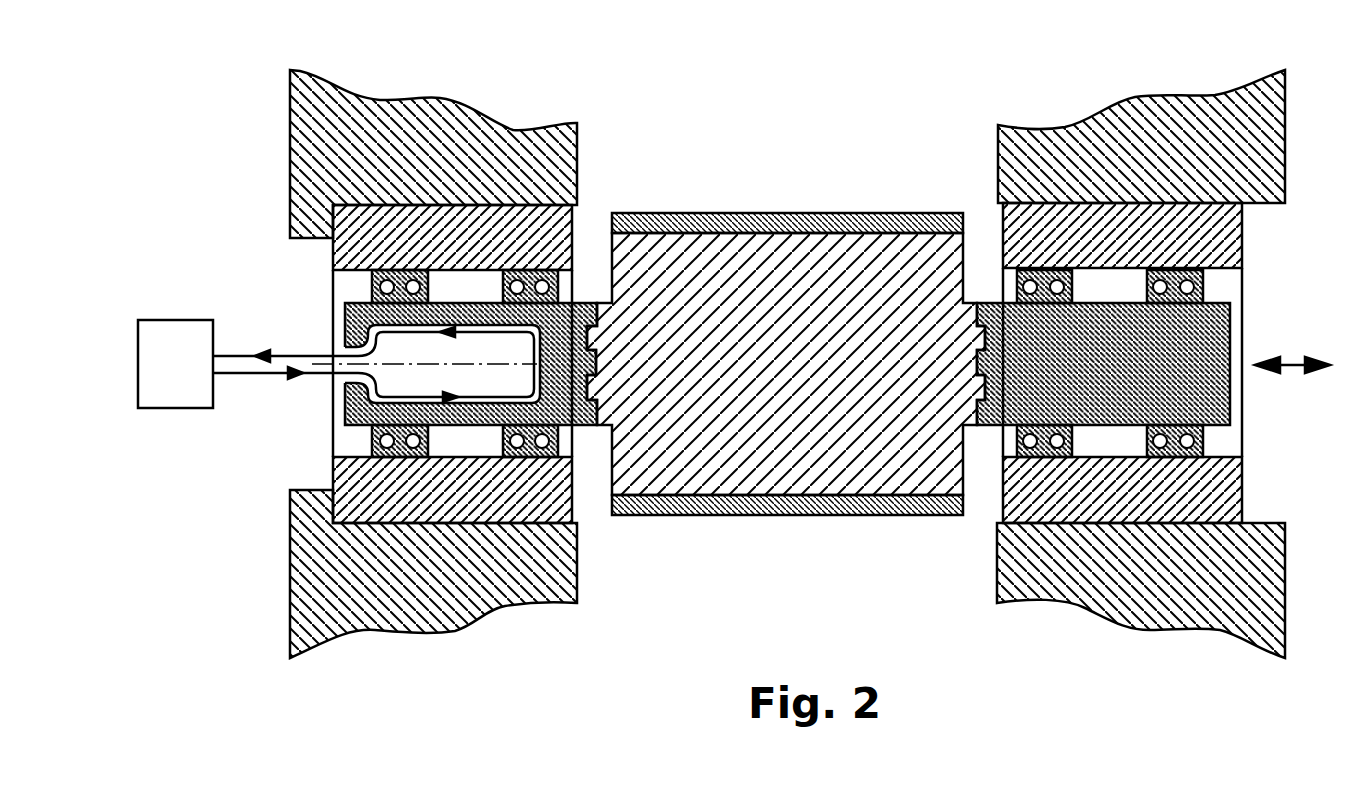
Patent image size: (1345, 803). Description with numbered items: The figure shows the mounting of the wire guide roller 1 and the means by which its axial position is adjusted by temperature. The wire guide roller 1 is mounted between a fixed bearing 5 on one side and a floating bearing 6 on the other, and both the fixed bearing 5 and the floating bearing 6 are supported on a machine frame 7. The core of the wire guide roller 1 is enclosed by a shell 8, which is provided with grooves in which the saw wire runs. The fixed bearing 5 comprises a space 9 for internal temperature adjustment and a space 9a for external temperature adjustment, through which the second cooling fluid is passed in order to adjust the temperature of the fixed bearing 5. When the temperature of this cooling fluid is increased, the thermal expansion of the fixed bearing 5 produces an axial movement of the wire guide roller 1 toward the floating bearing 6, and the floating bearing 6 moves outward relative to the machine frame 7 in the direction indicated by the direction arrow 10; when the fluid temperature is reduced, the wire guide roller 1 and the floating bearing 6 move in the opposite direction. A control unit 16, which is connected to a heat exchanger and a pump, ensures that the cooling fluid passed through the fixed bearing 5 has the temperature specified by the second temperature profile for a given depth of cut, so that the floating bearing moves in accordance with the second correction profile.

The wire guide roller 1 is at (740, 262).
The fixed bearing 5 is at (464, 285).
The floating bearing 6 is at (1112, 284).
The machine frame 7 is at (310, 119).
The shell 8 is at (815, 228).
The space for internal temperature adjustment 9 is at (348, 395).
The space for external temperature adjustment 9a is at (455, 495).
The direction arrow 10 is at (1293, 363).
The control unit 16 is at (178, 397).